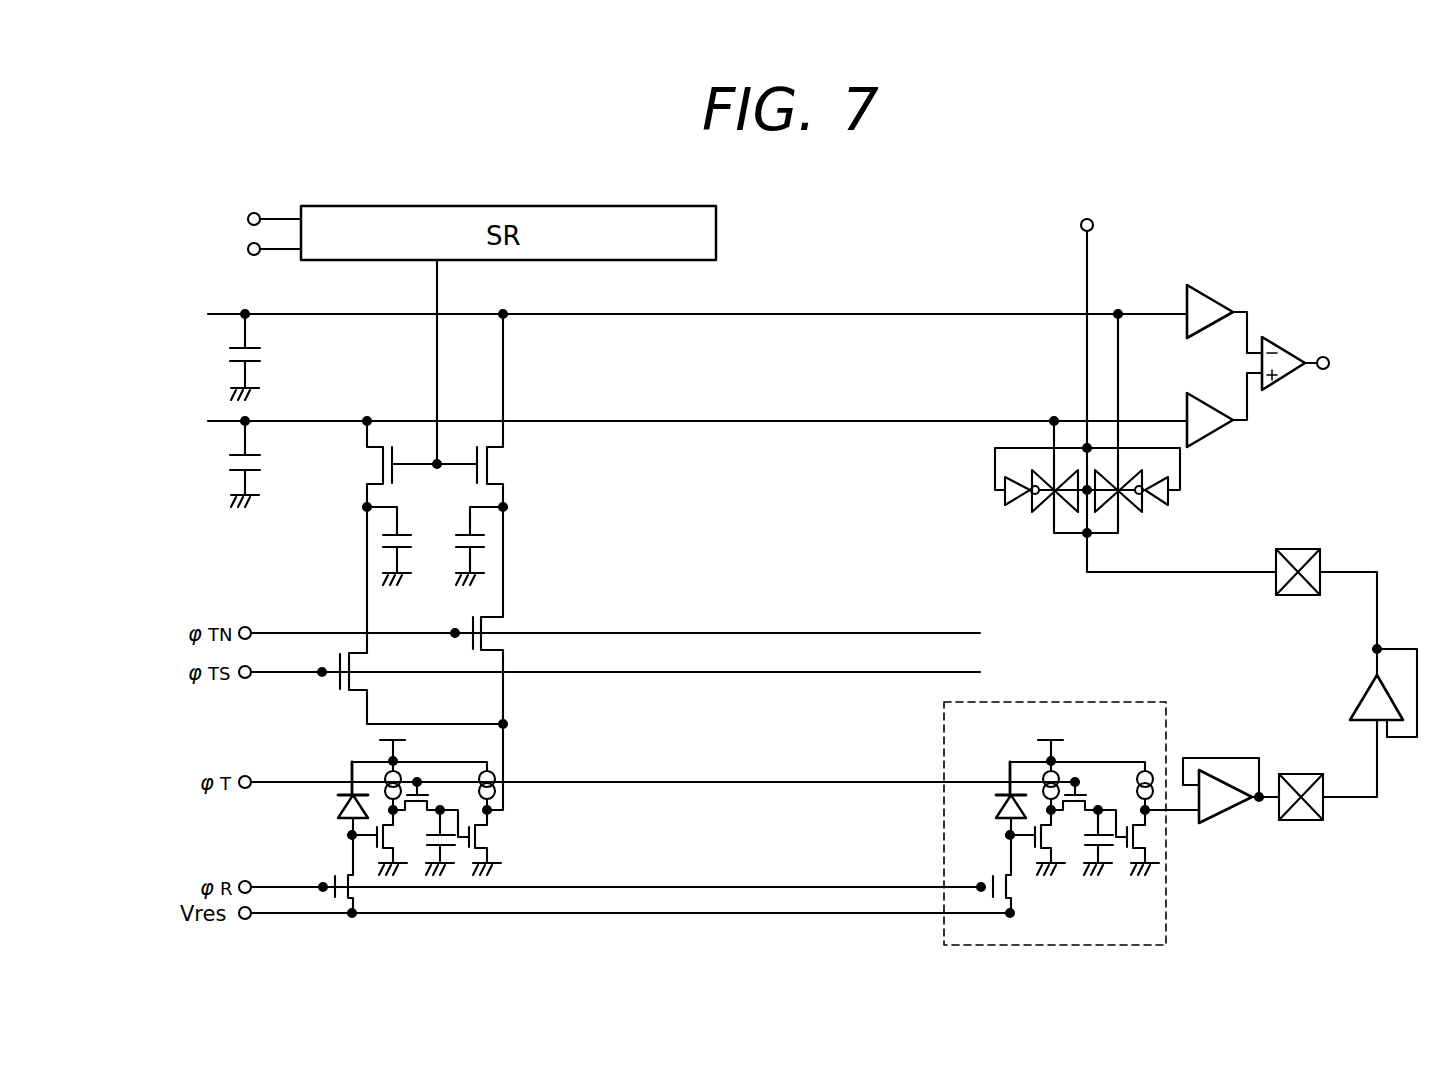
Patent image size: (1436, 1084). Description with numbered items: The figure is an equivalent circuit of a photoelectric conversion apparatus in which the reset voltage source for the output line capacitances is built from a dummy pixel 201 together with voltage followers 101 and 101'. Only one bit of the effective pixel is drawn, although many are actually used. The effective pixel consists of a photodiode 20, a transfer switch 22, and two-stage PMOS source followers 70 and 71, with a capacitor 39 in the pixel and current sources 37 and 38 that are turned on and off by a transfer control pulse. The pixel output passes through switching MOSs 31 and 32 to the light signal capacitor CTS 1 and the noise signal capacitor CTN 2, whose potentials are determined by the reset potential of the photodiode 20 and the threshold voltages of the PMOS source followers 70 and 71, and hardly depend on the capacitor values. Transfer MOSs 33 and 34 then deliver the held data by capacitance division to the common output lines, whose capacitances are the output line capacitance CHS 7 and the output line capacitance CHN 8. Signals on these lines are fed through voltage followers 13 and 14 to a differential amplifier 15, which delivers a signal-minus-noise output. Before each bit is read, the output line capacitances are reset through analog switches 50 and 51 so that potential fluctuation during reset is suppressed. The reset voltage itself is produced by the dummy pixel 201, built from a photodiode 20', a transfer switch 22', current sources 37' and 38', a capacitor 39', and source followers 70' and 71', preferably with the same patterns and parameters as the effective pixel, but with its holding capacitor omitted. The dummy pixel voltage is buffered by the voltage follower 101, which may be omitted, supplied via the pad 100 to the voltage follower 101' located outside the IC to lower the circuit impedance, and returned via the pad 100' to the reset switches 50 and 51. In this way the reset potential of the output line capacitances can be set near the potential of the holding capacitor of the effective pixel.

The light signal capacitor CTS 1 is at (403, 533).
The noise signal capacitor CTN 2 is at (482, 532).
The output line capacitance CHS 7 is at (262, 465).
The output line capacitance CHN 8 is at (262, 358).
The voltage follower 13 is at (1215, 292).
The voltage follower 14 is at (1218, 438).
The differential amplifier 15 is at (1290, 345).
The photodiode 20 is at (315, 837).
The transfer switch 22 is at (434, 771).
The switching MOS 31 is at (363, 680).
The switching MOS 32 is at (493, 624).
The transfer MOS 33 is at (373, 470).
The transfer MOS 34 is at (492, 462).
The current source 37 is at (354, 762).
The current source 38 is at (518, 761).
The capacitor 39 is at (454, 885).
The analog switch 50 is at (1030, 512).
The analog switch 51 is at (1137, 512).
The PMOS source follower 70 is at (393, 885).
The PMOS source follower 71 is at (509, 842).
The pad 100 is at (1307, 758).
The pad 100' is at (1306, 535).
The voltage follower 101 is at (1212, 760).
The voltage follower 101' is at (1349, 681).
The dummy pixel 201 is at (1166, 886).
The photodiode 20' is at (990, 837).
The transfer switch 22' is at (1095, 768).
The current source 37' is at (1011, 763).
The current source 38' is at (1174, 750).
The capacitor 39' is at (1115, 870).
The source follower 70' is at (1053, 870).
The source follower 71' is at (1171, 842).